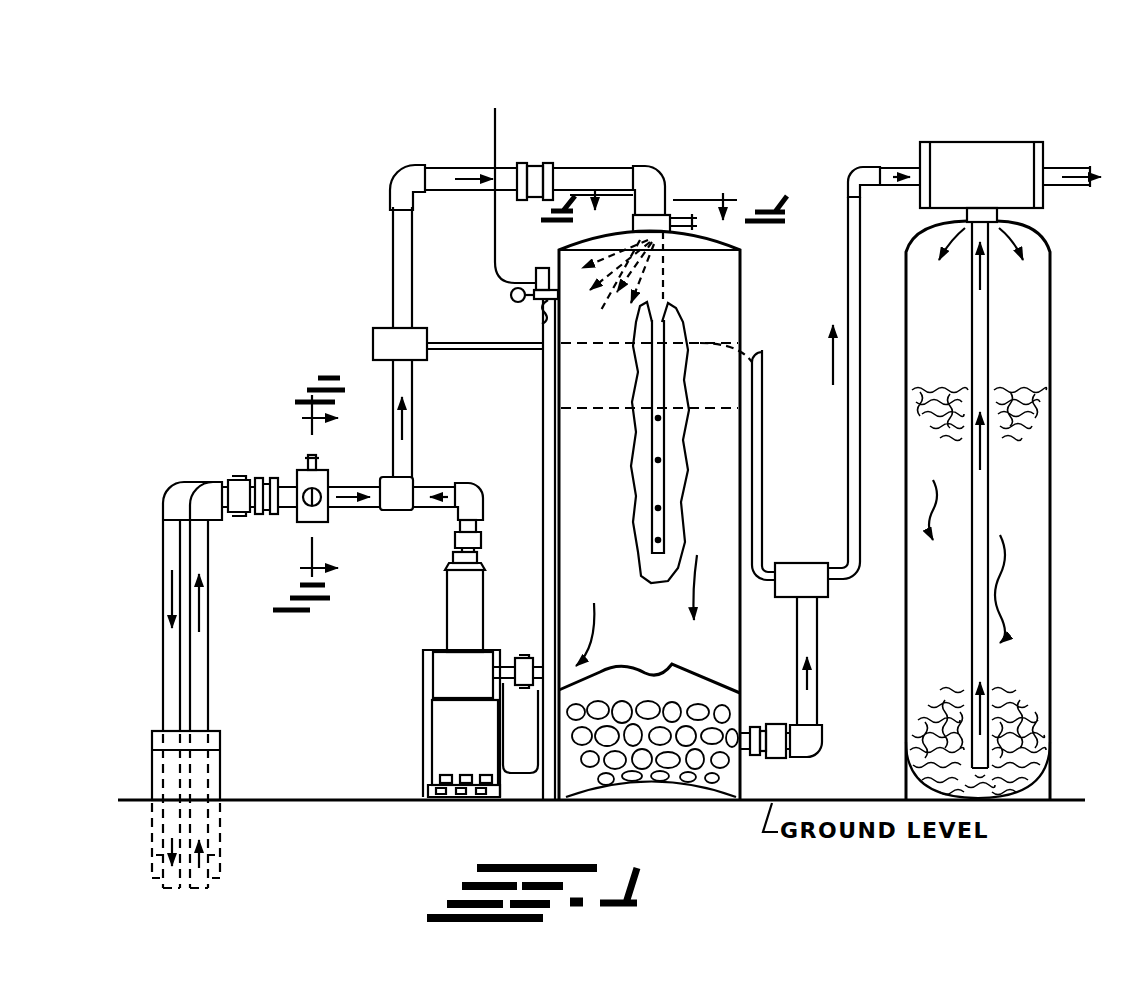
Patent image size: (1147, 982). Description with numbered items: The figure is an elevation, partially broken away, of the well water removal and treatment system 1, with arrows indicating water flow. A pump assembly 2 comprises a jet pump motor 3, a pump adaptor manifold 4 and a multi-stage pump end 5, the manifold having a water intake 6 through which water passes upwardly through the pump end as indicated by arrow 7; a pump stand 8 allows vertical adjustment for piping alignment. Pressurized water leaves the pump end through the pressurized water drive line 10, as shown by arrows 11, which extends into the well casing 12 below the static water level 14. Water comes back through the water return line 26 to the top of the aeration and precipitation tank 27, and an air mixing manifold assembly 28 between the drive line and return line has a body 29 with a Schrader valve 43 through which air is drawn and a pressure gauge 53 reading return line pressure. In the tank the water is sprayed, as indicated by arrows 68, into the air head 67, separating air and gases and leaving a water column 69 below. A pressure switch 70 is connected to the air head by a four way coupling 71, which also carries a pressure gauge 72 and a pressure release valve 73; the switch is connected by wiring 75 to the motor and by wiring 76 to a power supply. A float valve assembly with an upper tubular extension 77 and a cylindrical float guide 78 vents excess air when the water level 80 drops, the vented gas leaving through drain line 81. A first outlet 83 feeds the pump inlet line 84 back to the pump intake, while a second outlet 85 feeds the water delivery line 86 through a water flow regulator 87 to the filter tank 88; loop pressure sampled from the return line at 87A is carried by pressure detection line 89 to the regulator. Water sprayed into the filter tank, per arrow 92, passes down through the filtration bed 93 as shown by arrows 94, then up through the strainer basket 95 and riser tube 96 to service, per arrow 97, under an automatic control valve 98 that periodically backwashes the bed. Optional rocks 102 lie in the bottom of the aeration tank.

The well water removal and treatment system 1 is at (380, 233).
The pump assembly 2 is at (414, 655).
The jet pump motor 3 is at (438, 724).
The pump adaptor manifold 4 is at (468, 695).
The multi-stage pump end 5 is at (470, 603).
The water intake 6 is at (516, 657).
The arrow 7 is at (490, 672).
The pump stand 8 is at (425, 763).
The pressurized water drive line 10 is at (448, 488).
The arrows 11 is at (170, 592).
The well casing 12 is at (222, 776).
The static water level 14 is at (212, 866).
The water return line 26 is at (414, 245).
The aeration and precipitation tank 27 is at (731, 289).
The air mixing manifold assembly 28 is at (291, 472).
The body 29 is at (328, 521).
The Schrader valve 43 is at (316, 462).
The pressure gauge 53 is at (294, 506).
The air head 67 is at (688, 386).
The arrows 68 is at (618, 287).
The water column 69 is at (657, 568).
The pressure switch 70 is at (534, 273).
The four way coupling 71 is at (534, 302).
The pressure gauge 72 is at (510, 295).
The pressure release valve 73 is at (541, 318).
The wiring 75 is at (542, 423).
The wiring 76 is at (497, 136).
The upper tubular extension 77 is at (668, 284).
The cylindrical float guide 78 is at (661, 532).
The water level 80 is at (618, 408).
The drain line 81 is at (690, 218).
The first outlet 83 is at (547, 666).
The pump inlet line 84 is at (528, 688).
The second outlet 85 is at (740, 777).
The water delivery line 86 is at (818, 632).
The water flow regulator 87 is at (802, 574).
The loop pressure sampling point 87A is at (373, 347).
The filter tank 88 is at (1052, 318).
The pressure detection line 89 is at (764, 474).
The arrow 92 is at (833, 384).
The filtration bed 93 is at (1046, 412).
The arrows 94 is at (1015, 595).
The strainer basket 95 is at (988, 801).
The riser tube 96 is at (970, 652).
The arrow 97 is at (1088, 174).
The automatic control valve 98 is at (961, 152).
The rocks 102 is at (650, 686).